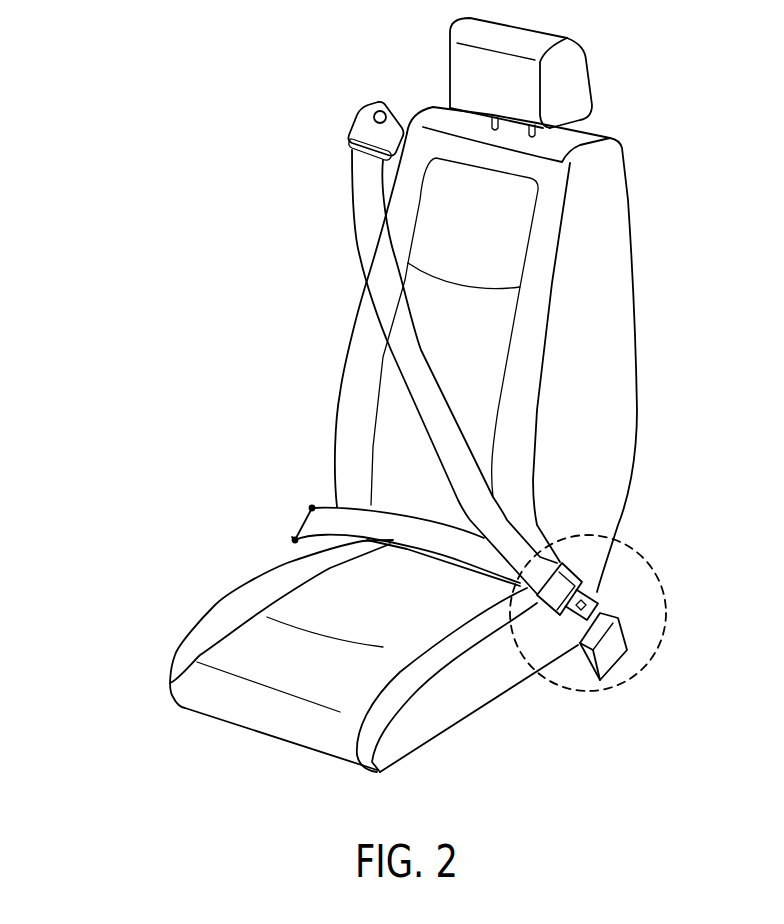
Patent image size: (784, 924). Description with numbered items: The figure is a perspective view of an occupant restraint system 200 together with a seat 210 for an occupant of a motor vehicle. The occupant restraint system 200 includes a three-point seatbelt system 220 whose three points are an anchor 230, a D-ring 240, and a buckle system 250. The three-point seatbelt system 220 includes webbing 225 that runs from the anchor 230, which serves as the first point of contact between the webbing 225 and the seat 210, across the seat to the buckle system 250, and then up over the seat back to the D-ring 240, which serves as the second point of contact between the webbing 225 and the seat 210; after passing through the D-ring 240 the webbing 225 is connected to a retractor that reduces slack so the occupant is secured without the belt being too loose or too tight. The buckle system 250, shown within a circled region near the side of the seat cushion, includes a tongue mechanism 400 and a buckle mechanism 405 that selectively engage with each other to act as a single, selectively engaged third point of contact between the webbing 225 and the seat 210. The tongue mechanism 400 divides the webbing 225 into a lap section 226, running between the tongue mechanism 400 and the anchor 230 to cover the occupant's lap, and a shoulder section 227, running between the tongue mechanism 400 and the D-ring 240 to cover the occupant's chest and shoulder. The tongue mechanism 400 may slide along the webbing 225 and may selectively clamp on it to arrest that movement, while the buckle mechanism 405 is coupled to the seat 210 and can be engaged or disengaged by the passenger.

The occupant restraint system 200 is at (112, 15).
The seat 210 is at (622, 350).
The three-point seatbelt system 220 is at (302, 297).
The webbing 225 is at (420, 417).
The lap section 226 is at (308, 518).
The shoulder section 227 is at (370, 263).
The anchor 230 is at (288, 532).
The D-ring 240 is at (365, 128).
The buckle system 250 is at (655, 561).
The tongue mechanism 400 is at (555, 628).
The buckle mechanism 405 is at (625, 665).